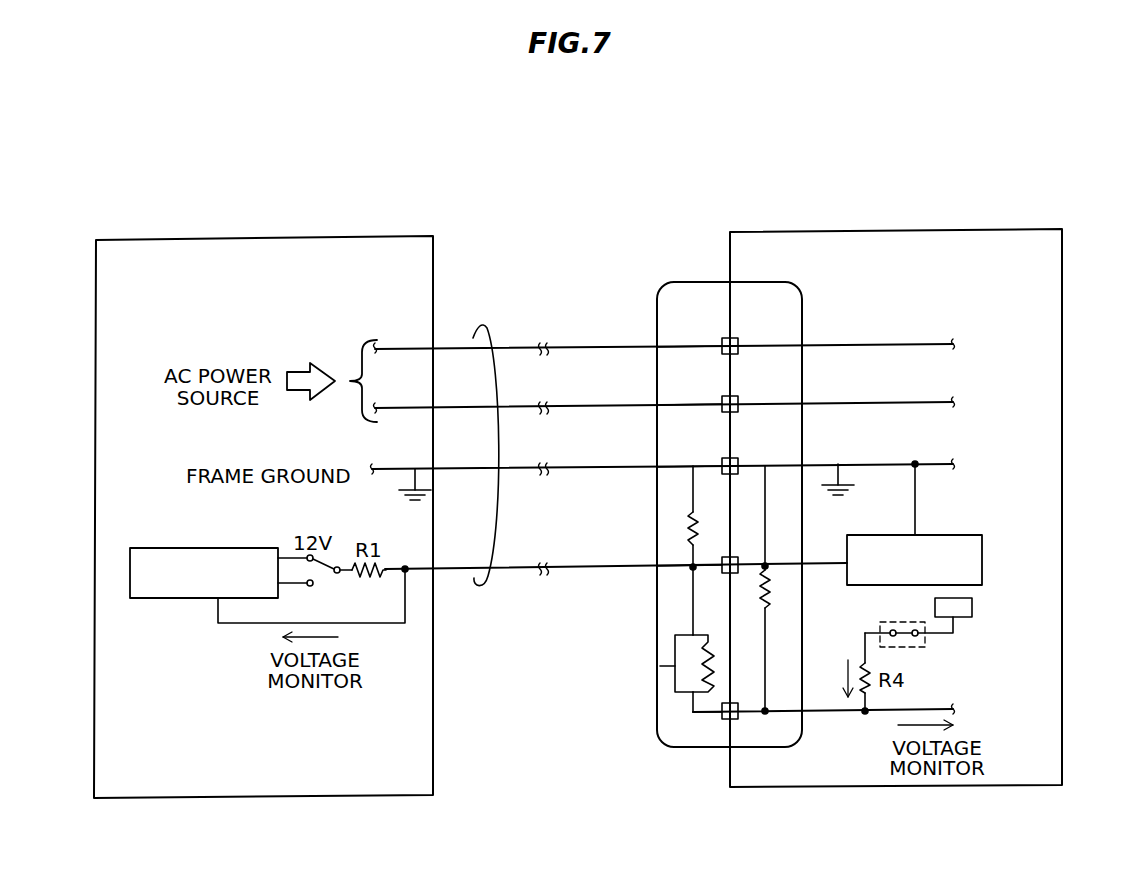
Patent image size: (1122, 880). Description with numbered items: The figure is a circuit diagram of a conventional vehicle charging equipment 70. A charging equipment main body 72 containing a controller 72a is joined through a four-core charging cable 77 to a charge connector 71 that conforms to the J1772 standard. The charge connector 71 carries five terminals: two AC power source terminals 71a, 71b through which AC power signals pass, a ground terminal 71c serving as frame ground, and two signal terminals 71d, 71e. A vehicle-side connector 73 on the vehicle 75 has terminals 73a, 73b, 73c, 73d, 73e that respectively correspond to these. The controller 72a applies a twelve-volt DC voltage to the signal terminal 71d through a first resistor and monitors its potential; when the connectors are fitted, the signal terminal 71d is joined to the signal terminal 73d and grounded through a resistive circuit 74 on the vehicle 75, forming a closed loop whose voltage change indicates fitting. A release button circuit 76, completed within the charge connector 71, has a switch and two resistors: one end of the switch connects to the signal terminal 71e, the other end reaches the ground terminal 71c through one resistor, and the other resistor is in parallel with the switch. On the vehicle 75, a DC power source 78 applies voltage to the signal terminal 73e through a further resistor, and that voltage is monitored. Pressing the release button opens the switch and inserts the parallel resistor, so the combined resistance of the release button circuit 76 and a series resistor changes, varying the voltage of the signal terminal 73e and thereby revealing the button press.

The vehicle charging equipment 70 is at (165, 198).
The charging equipment main body 72 is at (95, 240).
The controller 72a is at (167, 547).
The charging cable 77 is at (487, 328).
The charge connector 71 is at (673, 282).
The AC power source terminal 71a is at (720, 344).
The AC power source terminal 71b is at (720, 402).
The ground terminal 71c is at (720, 464).
The signal terminal 71d is at (720, 563).
The signal terminal 71e is at (720, 716).
The release button circuit 76 is at (677, 623).
The vehicle-side connector 73 is at (785, 283).
The terminal 73a is at (738, 343).
The terminal 73b is at (738, 401).
The terminal 73c is at (738, 462).
The signal terminal 73d is at (738, 561).
The signal terminal 73e is at (740, 719).
The vehicle 75 is at (1062, 230).
The resistive circuit 74 is at (982, 535).
The DC power source 78 is at (975, 607).